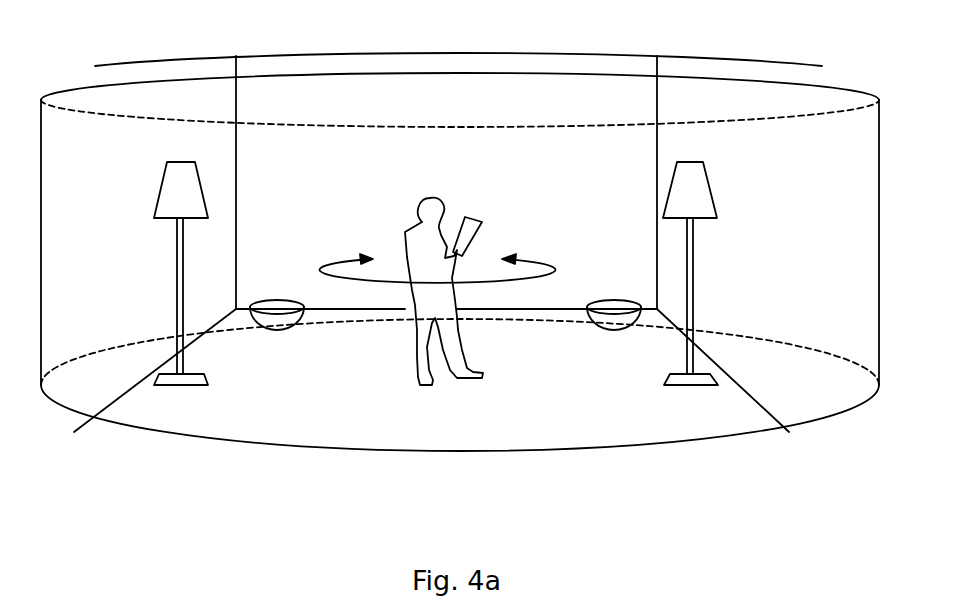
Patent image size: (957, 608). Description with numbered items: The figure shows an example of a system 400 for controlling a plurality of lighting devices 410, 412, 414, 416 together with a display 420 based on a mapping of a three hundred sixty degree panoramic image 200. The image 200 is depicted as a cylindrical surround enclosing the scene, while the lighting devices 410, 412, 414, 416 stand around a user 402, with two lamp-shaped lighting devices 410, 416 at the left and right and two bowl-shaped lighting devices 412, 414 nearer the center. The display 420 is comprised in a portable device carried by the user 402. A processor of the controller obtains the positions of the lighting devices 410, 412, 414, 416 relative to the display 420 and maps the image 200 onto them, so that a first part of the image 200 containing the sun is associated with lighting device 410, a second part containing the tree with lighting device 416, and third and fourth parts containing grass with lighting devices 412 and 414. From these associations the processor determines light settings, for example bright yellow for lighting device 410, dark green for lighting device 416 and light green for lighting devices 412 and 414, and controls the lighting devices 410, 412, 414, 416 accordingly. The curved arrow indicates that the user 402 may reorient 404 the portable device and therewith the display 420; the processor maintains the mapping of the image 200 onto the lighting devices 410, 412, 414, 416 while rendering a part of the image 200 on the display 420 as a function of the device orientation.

The image 200 is at (810, 405).
The system 400 is at (465, 508).
The user 402 is at (417, 342).
The reorientation 404 is at (513, 283).
The lighting device 410 is at (182, 193).
The lighting device 412 is at (275, 317).
The lighting device 414 is at (617, 313).
The lighting device 416 is at (695, 193).
The display 420 is at (470, 217).